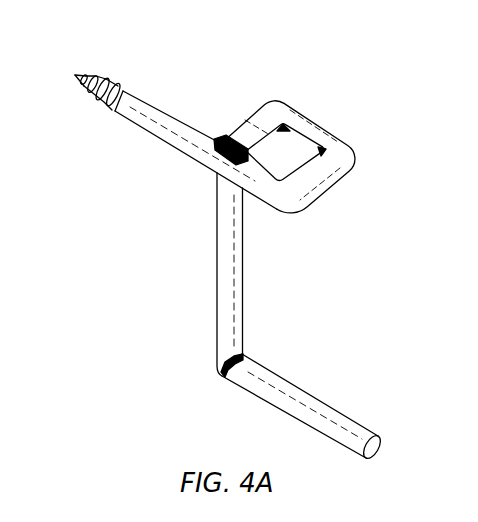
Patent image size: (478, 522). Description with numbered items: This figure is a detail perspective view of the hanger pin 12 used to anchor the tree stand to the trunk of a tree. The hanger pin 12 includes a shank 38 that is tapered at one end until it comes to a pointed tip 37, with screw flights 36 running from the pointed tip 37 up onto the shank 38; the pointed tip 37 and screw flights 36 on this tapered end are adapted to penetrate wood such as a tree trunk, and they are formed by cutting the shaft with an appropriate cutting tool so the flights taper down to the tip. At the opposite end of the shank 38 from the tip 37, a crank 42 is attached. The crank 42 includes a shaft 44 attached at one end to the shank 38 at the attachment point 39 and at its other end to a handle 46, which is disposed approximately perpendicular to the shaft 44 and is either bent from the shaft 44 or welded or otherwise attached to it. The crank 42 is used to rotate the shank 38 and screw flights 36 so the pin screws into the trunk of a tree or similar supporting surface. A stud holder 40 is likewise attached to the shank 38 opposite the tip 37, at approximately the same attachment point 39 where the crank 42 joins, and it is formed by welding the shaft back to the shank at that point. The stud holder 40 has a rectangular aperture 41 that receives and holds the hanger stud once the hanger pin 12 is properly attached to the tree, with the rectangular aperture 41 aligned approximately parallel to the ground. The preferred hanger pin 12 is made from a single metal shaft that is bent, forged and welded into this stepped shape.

The hanger pin 12 is at (197, 120).
The screw flights 36 is at (91, 88).
The pointed tip 37 is at (75, 75).
The shank 38 is at (163, 130).
The attachment point 39 is at (216, 158).
The stud holder 40 is at (337, 130).
The rectangular aperture 41 is at (280, 152).
The crank 42 is at (280, 367).
The shaft 44 is at (227, 278).
The handle 46 is at (330, 420).